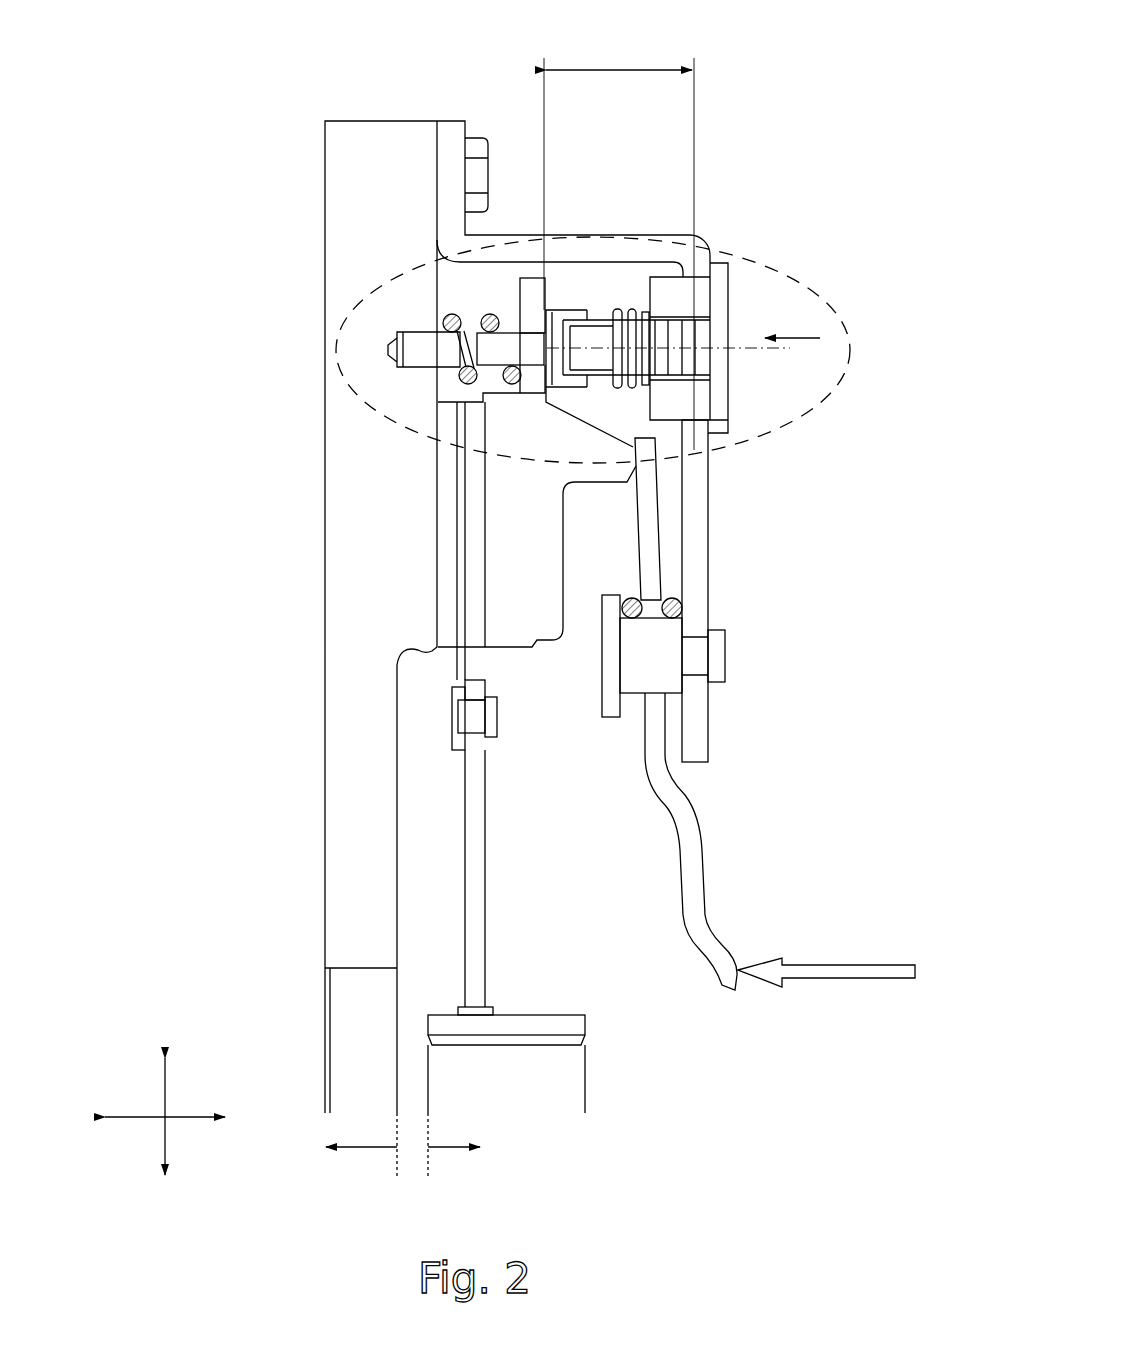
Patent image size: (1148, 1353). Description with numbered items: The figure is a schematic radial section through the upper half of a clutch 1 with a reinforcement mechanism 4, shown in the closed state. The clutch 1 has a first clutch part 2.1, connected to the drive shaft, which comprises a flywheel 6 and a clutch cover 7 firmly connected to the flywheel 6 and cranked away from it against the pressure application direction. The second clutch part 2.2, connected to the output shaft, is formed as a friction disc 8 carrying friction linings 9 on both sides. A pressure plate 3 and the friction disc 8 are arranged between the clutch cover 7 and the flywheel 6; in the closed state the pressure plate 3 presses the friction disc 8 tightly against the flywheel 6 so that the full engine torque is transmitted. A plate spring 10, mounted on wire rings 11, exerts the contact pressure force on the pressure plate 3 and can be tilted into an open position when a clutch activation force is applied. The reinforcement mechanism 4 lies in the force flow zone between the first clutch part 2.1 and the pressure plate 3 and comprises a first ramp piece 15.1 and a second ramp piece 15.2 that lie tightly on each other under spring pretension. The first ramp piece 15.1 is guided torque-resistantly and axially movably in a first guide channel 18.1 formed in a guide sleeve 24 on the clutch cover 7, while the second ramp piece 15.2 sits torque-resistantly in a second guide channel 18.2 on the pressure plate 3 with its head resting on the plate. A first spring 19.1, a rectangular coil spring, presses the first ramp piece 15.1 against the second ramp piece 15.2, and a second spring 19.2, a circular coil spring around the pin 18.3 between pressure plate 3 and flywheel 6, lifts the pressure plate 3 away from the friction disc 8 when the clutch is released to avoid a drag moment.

The clutch 1 is at (797, 68).
The first clutch part 2.1 is at (305, 723).
The second clutch part 2.2 is at (522, 940).
The pressure plate 3 is at (548, 550).
The reinforcement mechanism 4 is at (714, 450).
The flywheel 6 is at (325, 888).
The clutch cover 7 is at (708, 612).
The friction disc 8 is at (480, 842).
The friction linings 9 is at (447, 597).
The plate spring 10 is at (692, 837).
The wire rings 11 is at (683, 593).
The first ramp piece 15.1 is at (597, 352).
The second ramp piece 15.2 is at (545, 345).
The first guide channel 18.1 is at (725, 373).
The second guide channel 18.2 is at (515, 330).
The pin 18.3 is at (388, 345).
The first spring 19.1 is at (630, 310).
The second spring 19.2 is at (463, 378).
The guide sleeve 24 is at (728, 390).